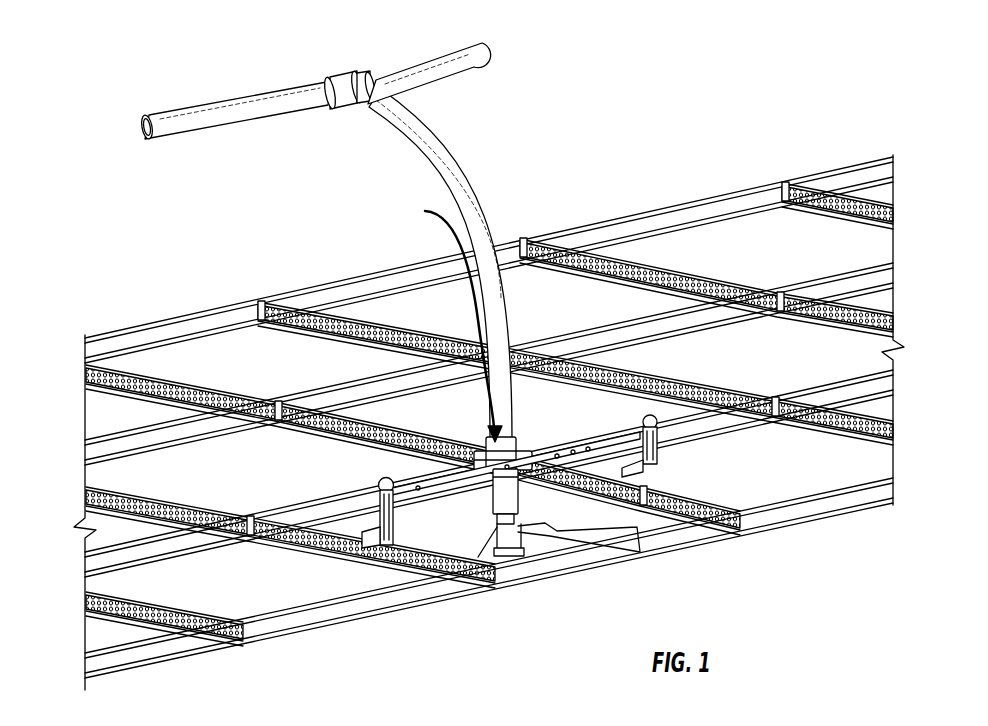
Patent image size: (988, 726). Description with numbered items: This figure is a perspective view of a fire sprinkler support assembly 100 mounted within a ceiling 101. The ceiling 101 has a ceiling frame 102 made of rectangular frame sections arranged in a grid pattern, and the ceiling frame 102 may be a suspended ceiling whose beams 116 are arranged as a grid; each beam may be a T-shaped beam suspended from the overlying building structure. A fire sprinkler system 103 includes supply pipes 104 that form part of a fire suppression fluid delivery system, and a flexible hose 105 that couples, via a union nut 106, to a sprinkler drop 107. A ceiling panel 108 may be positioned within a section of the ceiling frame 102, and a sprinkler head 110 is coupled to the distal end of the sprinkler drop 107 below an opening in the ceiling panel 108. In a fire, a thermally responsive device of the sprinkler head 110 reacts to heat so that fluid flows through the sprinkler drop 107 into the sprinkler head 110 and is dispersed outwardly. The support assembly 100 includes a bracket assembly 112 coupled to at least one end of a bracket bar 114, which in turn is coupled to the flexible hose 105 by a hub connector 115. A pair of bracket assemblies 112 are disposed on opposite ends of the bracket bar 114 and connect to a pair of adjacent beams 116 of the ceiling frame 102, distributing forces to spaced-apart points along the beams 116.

The fire sprinkler support assembly 100 is at (438, 528).
The ceiling 101 is at (93, 262).
The ceiling frame 102 is at (389, 626).
The fire sprinkler system 103 is at (131, 125).
The supply pipes 104 is at (496, 50).
The flexible hose 105 is at (483, 170).
The union nut 106 is at (524, 448).
The sprinkler drop 107 is at (602, 537).
The ceiling panel 108 is at (701, 508).
The sprinkler head 110 is at (521, 560).
The bracket assembly 112 is at (362, 483).
The bracket bar 114 is at (380, 485).
The hub connector 115 is at (445, 320).
The beams 116 is at (884, 418).